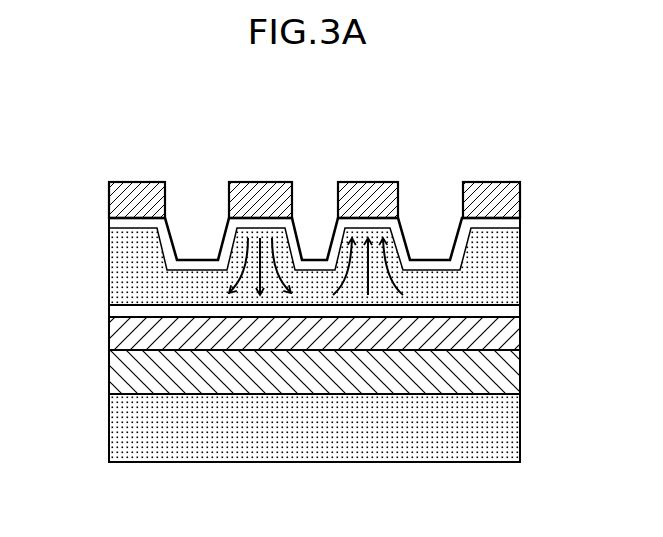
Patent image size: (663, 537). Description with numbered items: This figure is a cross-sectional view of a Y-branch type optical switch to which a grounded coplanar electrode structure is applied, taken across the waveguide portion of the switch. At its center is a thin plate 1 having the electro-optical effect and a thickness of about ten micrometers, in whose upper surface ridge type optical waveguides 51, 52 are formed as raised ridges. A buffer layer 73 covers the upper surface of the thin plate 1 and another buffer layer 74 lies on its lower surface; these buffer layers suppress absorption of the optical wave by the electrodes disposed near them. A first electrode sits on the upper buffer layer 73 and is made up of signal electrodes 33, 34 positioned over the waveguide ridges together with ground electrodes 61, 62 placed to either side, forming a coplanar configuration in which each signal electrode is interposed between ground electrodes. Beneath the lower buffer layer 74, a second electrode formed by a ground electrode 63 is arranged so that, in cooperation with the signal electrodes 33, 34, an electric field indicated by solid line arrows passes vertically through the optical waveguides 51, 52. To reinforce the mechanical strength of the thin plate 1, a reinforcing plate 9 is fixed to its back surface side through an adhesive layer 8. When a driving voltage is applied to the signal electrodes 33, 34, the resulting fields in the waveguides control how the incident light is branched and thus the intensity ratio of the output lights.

The thin plate 1 is at (492, 269).
The adhesive layer 8 is at (493, 370).
The reinforcing plate 9 is at (445, 427).
The signal electrode 33 is at (260, 198).
The signal electrode 34 is at (368, 197).
The ridge type optical waveguide 51 is at (392, 262).
The ridge type optical waveguide 52 is at (255, 252).
The ground electrode 61 is at (138, 198).
The ground electrode 62 is at (490, 198).
The ground electrode 63 is at (487, 327).
The buffer layer 73 is at (120, 221).
The buffer layer 74 is at (137, 312).